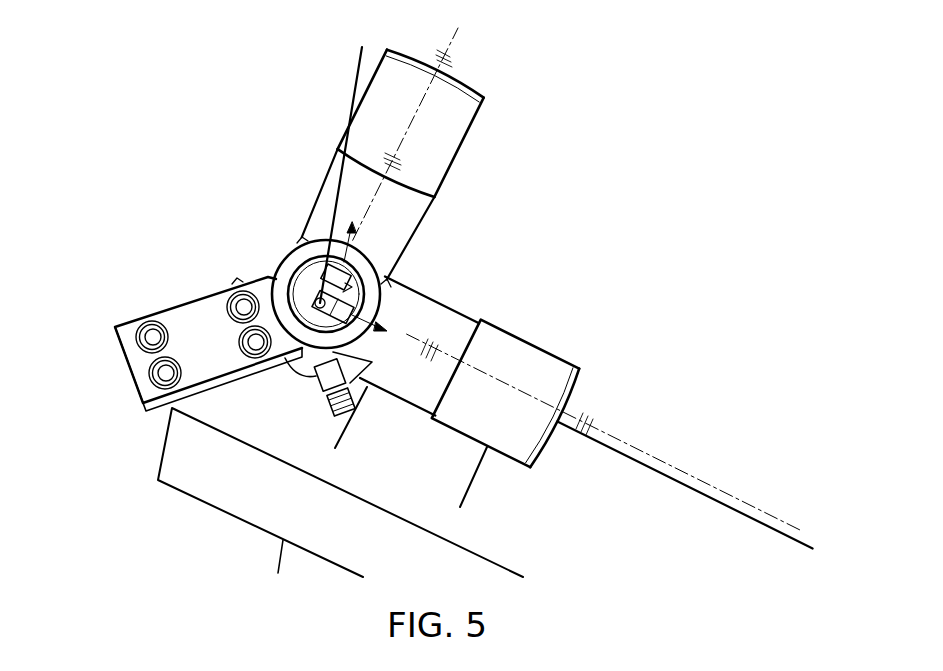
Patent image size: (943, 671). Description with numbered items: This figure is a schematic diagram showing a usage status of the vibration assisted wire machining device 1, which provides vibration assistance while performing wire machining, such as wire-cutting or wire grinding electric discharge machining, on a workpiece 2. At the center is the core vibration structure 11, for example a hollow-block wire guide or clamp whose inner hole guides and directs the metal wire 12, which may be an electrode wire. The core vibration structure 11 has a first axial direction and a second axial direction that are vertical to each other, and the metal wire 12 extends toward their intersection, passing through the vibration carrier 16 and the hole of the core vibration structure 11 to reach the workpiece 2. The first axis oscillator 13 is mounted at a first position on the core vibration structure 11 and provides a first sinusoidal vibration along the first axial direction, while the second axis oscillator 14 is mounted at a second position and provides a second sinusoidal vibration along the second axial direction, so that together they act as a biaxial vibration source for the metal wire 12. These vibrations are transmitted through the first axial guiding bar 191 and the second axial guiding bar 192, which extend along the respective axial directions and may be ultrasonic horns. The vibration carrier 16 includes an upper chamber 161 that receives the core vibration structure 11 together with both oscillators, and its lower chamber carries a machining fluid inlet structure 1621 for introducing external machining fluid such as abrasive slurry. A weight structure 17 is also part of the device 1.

The vibration assisted wire machining device 1 is at (176, 170).
The workpiece 2 is at (632, 473).
The core vibration structure 11 is at (310, 292).
The metal wire 12 is at (357, 65).
The first axis oscillator 13 is at (512, 348).
The second axis oscillator 14 is at (460, 117).
The vibration carrier 16 is at (380, 282).
The upper chamber 161 is at (305, 242).
The machining fluid inlet structure 1621 is at (295, 373).
The weight structure 17 is at (183, 313).
The first axial guiding bar 191 is at (378, 352).
The second axial guiding bar 192 is at (348, 284).